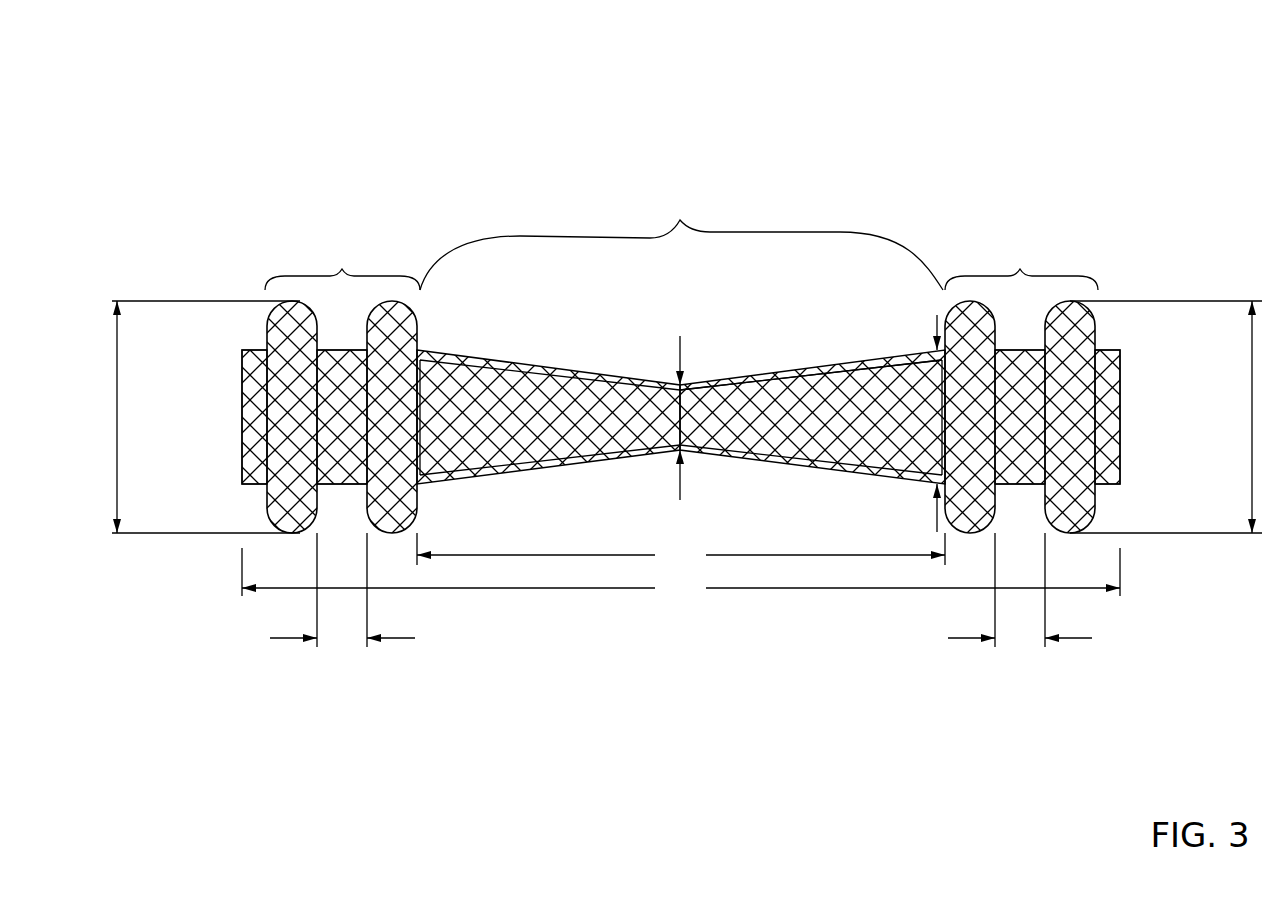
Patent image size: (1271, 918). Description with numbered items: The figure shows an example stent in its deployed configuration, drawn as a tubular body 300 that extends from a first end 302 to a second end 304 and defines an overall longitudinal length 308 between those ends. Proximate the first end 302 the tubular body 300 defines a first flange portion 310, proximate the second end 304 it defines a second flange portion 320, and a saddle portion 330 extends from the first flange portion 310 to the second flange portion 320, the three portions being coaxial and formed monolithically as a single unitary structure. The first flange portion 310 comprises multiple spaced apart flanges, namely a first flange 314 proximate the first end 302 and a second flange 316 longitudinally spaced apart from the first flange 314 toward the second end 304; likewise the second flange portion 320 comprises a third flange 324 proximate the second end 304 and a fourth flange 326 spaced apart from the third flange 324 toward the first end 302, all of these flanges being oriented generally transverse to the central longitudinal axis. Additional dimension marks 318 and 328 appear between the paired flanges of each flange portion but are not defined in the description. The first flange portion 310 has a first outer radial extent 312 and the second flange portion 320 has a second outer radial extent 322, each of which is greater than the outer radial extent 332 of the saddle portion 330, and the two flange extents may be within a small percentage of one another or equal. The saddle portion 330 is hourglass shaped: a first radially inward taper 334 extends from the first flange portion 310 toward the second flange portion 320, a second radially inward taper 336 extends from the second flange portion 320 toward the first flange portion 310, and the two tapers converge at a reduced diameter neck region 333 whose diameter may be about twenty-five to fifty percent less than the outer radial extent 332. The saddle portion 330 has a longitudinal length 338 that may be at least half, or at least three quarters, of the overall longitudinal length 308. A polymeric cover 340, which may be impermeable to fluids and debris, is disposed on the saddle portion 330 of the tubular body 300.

The tubular body 300 is at (1063, 104).
The first end 302 is at (242, 484).
The second end 304 is at (1120, 484).
The overall longitudinal length 308 is at (681, 575).
The first flange portion 310 is at (342, 267).
The first outer radial extent 312 is at (198, 417).
The first flange 314 is at (289, 540).
The second flange 316 is at (388, 540).
The flange spacing 318 is at (318, 593).
The second flange portion 320 is at (1021, 267).
The second outer radial extent 322 is at (1169, 417).
The third flange 324 is at (1068, 540).
The fourth flange 326 is at (968, 540).
The flange spacing 328 is at (1044, 593).
The saddle portion 330 is at (681, 242).
The outer radial extent 332 is at (915, 411).
The reduced diameter neck region 333 is at (681, 405).
The first radially inward taper 334 is at (538, 355).
The second radially inward taper 336 is at (790, 360).
The longitudinal length 338 is at (681, 551).
The polymeric cover 340 is at (877, 360).